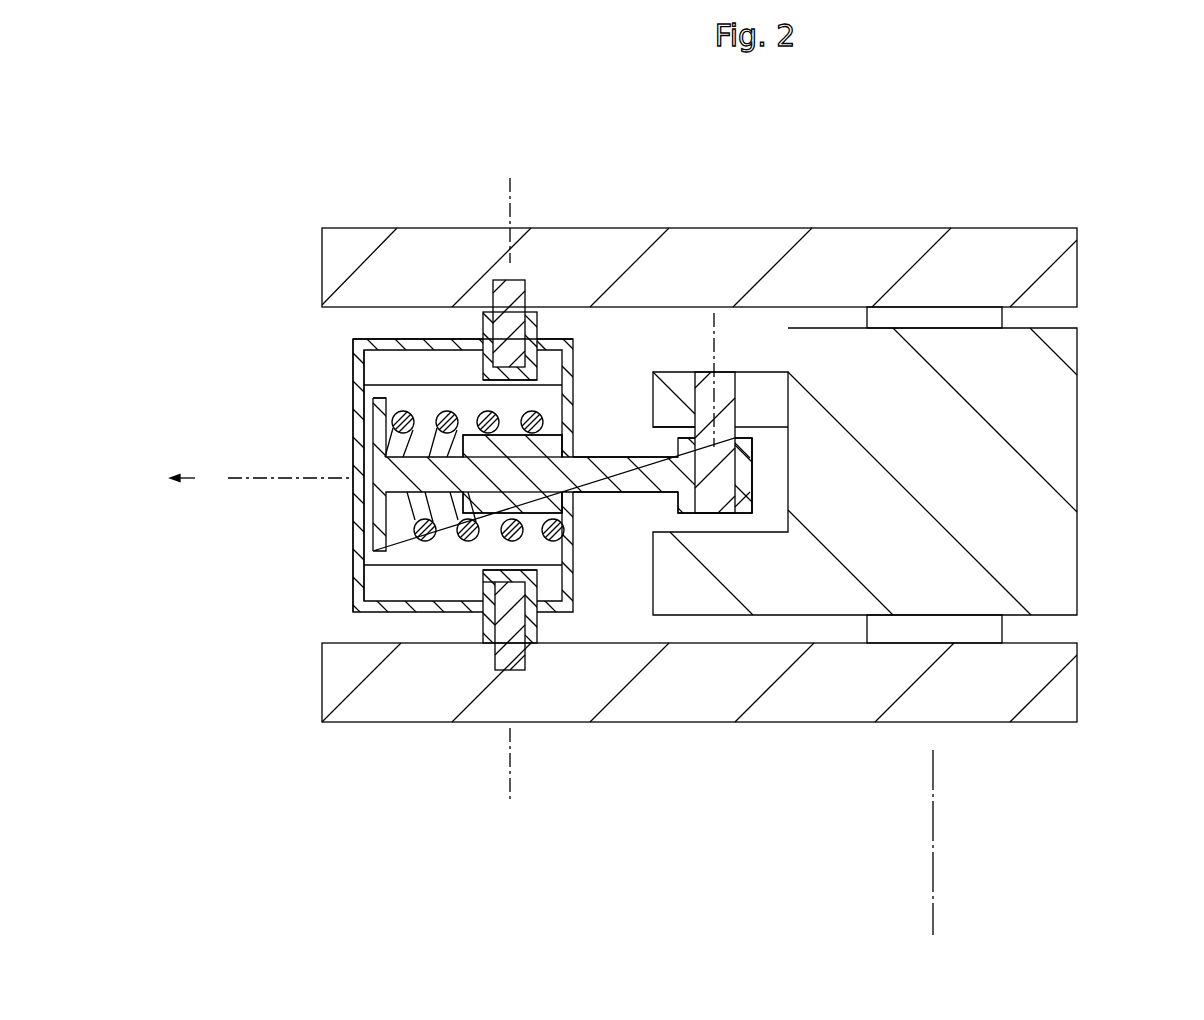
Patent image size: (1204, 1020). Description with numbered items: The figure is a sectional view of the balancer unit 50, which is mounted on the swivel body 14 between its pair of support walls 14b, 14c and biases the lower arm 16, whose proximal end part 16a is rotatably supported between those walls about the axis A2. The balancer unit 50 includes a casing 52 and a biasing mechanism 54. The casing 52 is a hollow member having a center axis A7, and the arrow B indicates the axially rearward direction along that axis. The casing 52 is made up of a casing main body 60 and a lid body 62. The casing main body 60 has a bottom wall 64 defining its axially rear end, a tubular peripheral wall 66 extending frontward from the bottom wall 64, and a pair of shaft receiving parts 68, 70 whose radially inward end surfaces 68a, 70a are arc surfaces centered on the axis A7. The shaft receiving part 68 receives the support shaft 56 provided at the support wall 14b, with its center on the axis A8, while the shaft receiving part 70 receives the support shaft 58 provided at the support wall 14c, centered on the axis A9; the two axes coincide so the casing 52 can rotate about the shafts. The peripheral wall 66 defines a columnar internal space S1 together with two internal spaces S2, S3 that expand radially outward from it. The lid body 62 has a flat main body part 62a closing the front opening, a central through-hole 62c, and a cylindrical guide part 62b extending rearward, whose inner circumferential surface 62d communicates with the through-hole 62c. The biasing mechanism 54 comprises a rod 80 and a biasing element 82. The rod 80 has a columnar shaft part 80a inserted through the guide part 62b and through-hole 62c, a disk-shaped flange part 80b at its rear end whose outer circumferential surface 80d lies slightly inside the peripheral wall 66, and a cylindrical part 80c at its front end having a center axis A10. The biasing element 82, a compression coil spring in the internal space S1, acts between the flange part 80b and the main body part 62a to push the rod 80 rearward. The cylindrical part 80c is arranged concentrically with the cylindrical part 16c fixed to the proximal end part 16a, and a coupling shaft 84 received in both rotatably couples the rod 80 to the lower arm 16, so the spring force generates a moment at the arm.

The swivel body 14 is at (651, 439).
The support wall 14b is at (676, 698).
The support wall 14c is at (683, 278).
The lower arm 16 is at (921, 407).
The proximal end part 16a is at (917, 481).
The cylindrical part 16c is at (760, 395).
The balancer unit 50 is at (573, 469).
The casing 52 is at (573, 469).
The biasing mechanism 54 is at (355, 454).
The support shaft 56 is at (520, 667).
The support shaft 58 is at (517, 290).
The casing main body 60 is at (573, 396).
The lid body 62 is at (585, 468).
The main body part 62a is at (572, 420).
The guide part 62b is at (505, 435).
The through-hole 62c is at (580, 486).
The inner circumferential surface 62d is at (527, 515).
The bottom wall 64 is at (360, 530).
The peripheral wall 66 is at (410, 332).
The shaft receiving part 68 is at (507, 537).
The end surface 68a is at (492, 571).
The shaft receiving part 70 is at (507, 409).
The end surface 70a is at (483, 386).
The rod 80 is at (669, 484).
The shaft part 80a is at (615, 485).
The flange part 80b is at (378, 510).
The cylindrical part 80c is at (753, 470).
The outer circumferential surface 80d is at (372, 396).
The biasing element 82 is at (478, 592).
The coupling shaft 84 is at (715, 500).
The internal space S1 is at (419, 413).
The internal space S2 is at (377, 596).
The internal space S3 is at (377, 378).
The axis A2 is at (935, 866).
The center axis A7 is at (245, 480).
The axis A8 is at (505, 757).
The axis A9 is at (507, 193).
The center axis A10 is at (716, 325).
The arrow B is at (171, 478).